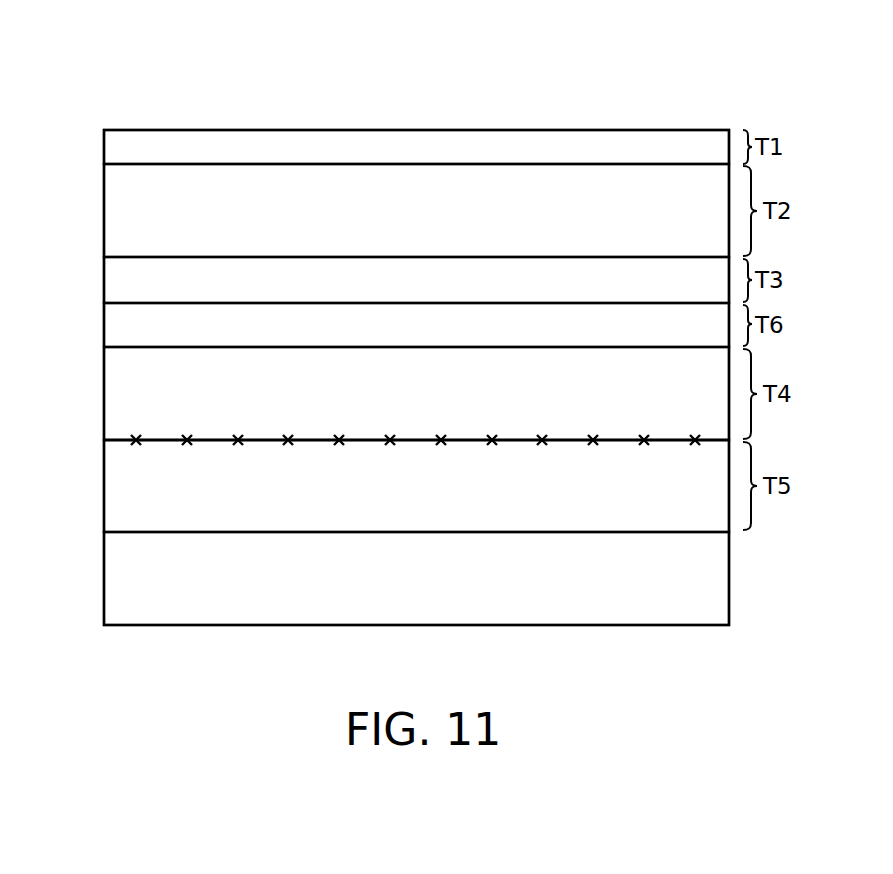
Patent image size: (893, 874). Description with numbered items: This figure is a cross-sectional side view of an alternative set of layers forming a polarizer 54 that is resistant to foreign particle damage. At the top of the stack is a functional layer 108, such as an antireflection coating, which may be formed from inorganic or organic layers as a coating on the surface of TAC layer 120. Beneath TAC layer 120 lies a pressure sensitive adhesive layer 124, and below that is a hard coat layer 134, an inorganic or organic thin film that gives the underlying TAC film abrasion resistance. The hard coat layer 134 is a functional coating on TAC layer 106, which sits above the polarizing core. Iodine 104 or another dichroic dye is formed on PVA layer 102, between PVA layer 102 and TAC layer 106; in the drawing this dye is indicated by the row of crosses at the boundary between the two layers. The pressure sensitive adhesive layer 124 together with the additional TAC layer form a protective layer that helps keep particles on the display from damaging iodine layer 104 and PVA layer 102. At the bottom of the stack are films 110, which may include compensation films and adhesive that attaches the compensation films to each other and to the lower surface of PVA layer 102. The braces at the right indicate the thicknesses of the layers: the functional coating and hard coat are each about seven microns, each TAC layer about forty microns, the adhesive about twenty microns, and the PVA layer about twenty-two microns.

The polarizer 54 is at (686, 36).
The functional layer 108 is at (112, 146).
The TAC layer 120 is at (112, 210).
The pressure sensitive adhesive layer 124 is at (112, 277).
The hard coat layer 134 is at (112, 327).
The TAC layer 106 is at (112, 385).
The iodine layer 104 is at (390, 446).
The PVA layer 102 is at (112, 479).
The films 110 is at (89, 532).